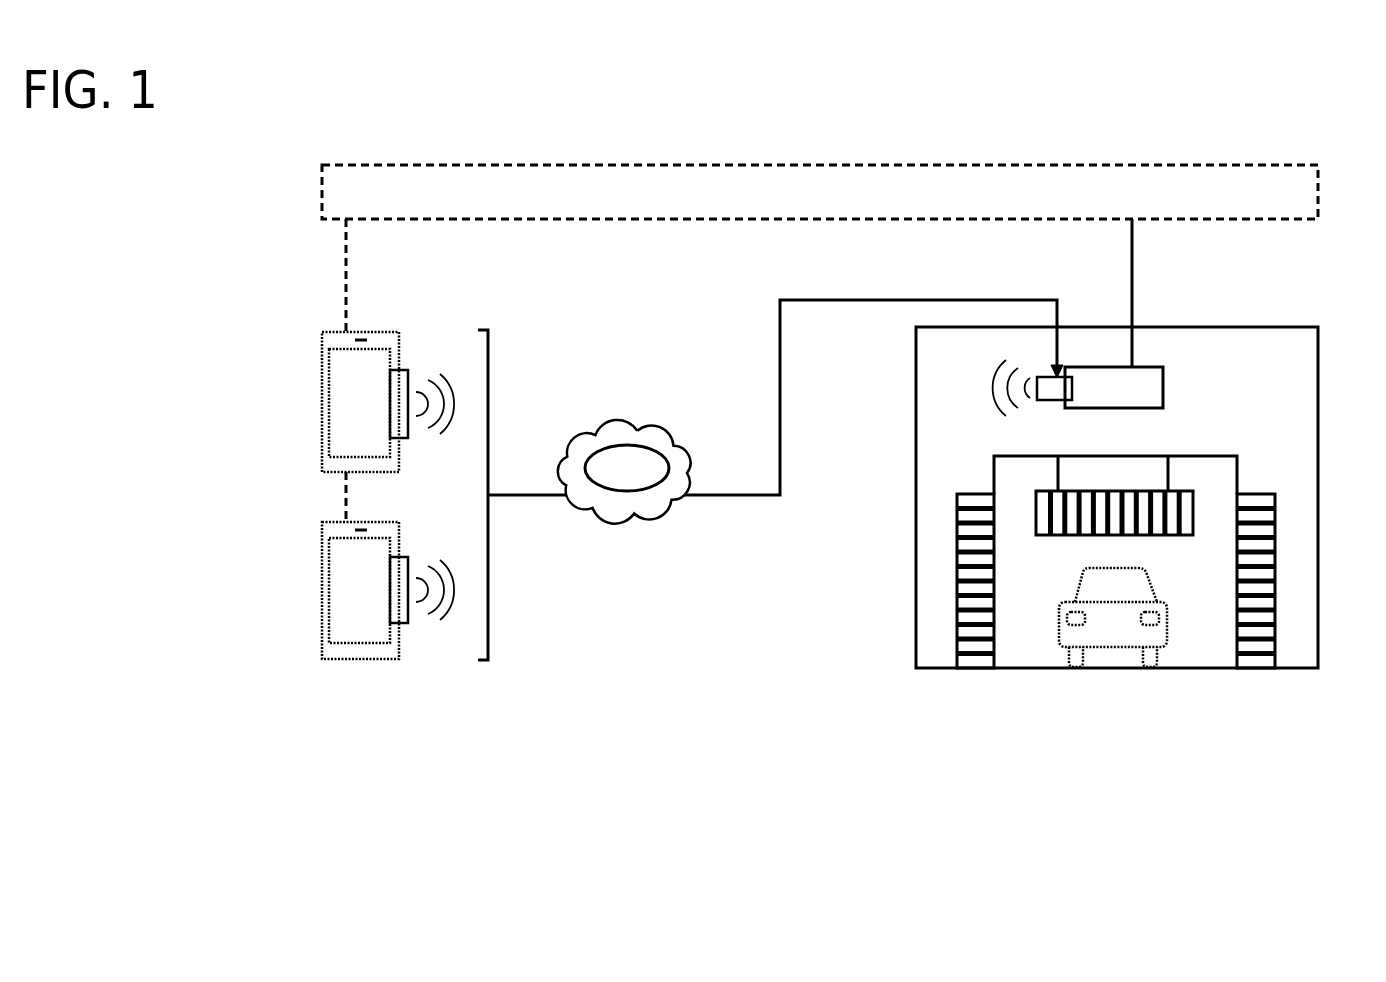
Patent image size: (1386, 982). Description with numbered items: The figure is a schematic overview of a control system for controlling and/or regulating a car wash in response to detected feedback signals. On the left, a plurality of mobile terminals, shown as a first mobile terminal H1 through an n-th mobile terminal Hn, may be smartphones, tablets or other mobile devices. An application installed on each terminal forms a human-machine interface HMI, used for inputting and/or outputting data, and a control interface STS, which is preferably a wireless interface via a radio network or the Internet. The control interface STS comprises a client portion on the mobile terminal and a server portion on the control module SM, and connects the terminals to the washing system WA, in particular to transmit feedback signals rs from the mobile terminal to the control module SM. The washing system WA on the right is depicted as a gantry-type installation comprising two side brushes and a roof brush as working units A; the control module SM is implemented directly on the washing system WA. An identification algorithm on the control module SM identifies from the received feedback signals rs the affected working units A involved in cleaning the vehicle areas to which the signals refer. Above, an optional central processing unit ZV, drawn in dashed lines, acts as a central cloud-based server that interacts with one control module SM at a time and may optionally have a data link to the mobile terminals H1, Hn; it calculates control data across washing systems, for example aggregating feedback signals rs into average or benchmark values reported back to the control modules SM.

The central processing unit ZV is at (820, 192).
The first mobile terminal H1 is at (322, 334).
The n-th mobile terminal Hn is at (322, 523).
The human-machine interface HMI is at (329, 405).
The control interface STS is at (400, 372).
The feedback signals rs is at (624, 472).
The control module SM is at (1114, 387).
The washing system WA is at (1244, 321).
The working units A is at (1036, 512).